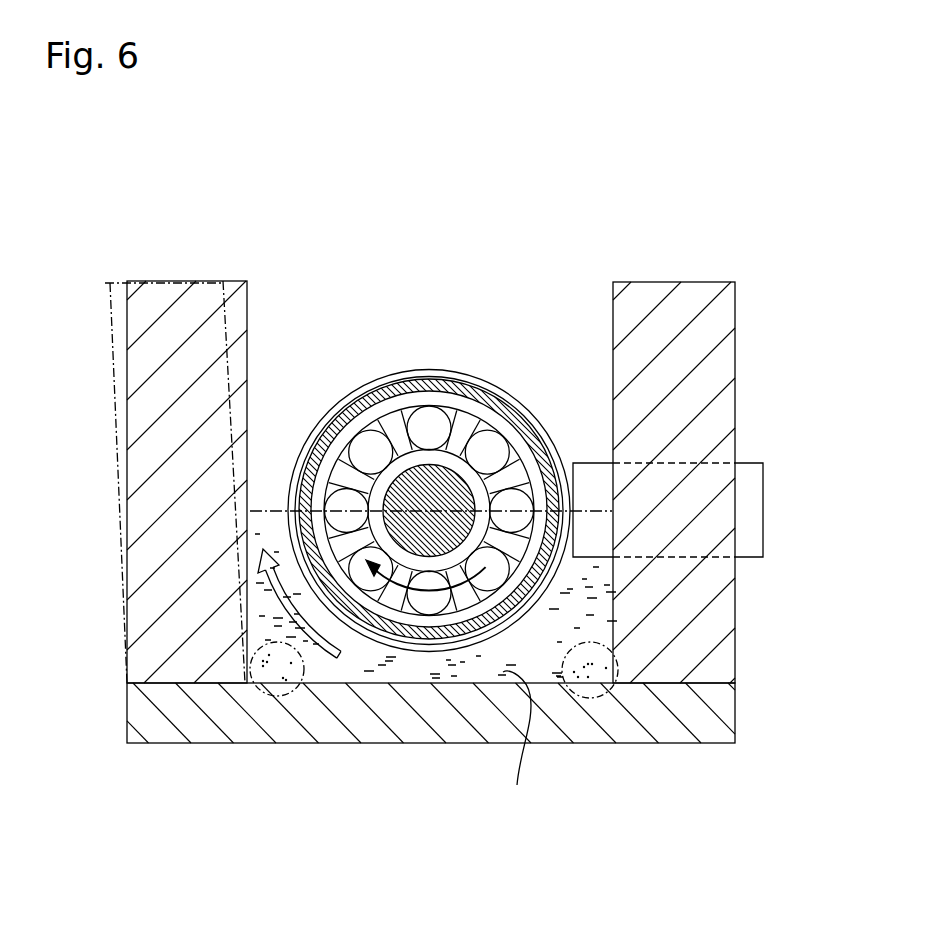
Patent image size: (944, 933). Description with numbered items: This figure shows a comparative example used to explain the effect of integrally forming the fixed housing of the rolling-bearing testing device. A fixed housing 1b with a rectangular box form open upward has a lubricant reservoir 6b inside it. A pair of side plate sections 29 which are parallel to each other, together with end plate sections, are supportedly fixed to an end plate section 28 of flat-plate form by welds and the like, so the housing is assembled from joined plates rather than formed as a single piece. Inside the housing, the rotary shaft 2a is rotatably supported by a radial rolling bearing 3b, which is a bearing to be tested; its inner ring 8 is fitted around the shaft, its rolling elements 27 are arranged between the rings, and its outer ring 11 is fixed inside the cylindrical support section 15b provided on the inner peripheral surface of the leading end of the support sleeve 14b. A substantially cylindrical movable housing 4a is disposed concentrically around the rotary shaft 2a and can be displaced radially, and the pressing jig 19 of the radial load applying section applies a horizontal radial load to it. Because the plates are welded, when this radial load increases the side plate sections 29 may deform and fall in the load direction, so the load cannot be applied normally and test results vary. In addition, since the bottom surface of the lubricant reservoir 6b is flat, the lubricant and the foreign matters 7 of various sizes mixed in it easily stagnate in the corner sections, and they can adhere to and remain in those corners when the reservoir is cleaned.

The fixed housing 1b is at (455, 494).
The side plate section 29 is at (113, 283).
The end plate section 28 is at (418, 733).
The pressing jig 19 is at (752, 527).
The movable housing 4a is at (429, 370).
The inner ring 8 is at (380, 412).
The support sleeve 14b is at (397, 408).
The radial rolling bearing 3b is at (512, 412).
The outer ring 11 is at (468, 405).
The rolling elements (balls) 27 is at (487, 450).
The rotary shaft 2a is at (544, 452).
The support section 15b is at (378, 610).
The foreign matter 7 is at (607, 676).
The lubricant reservoir 6b is at (517, 740).